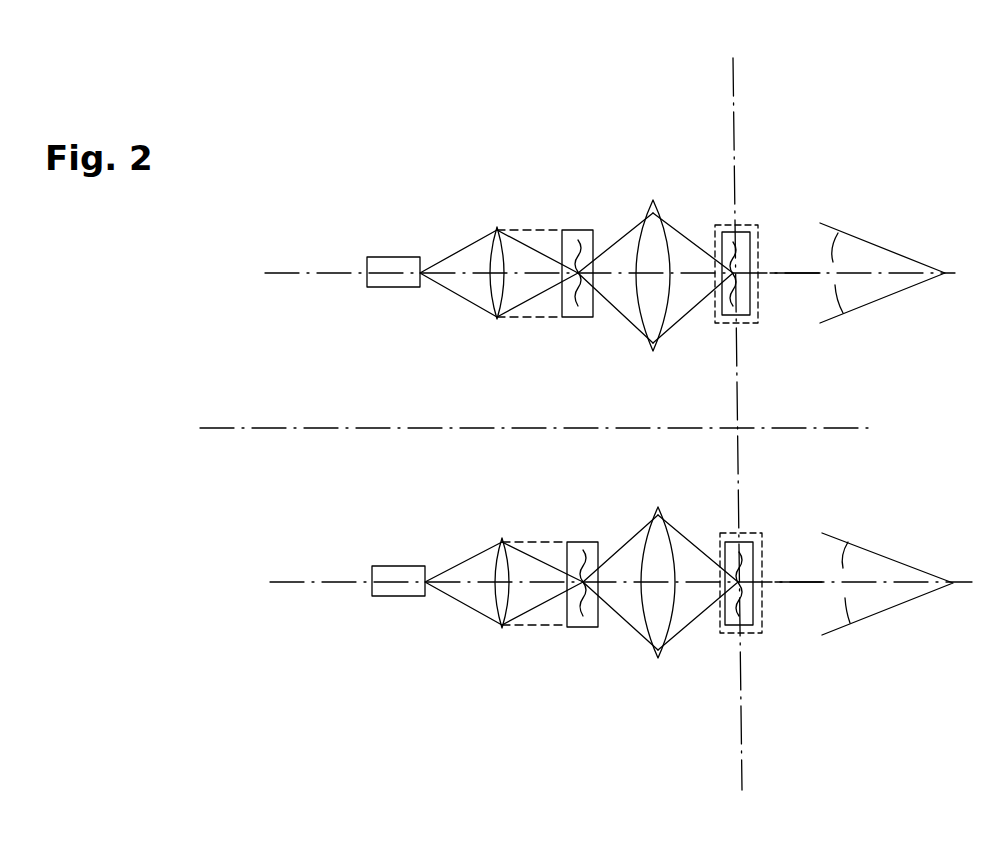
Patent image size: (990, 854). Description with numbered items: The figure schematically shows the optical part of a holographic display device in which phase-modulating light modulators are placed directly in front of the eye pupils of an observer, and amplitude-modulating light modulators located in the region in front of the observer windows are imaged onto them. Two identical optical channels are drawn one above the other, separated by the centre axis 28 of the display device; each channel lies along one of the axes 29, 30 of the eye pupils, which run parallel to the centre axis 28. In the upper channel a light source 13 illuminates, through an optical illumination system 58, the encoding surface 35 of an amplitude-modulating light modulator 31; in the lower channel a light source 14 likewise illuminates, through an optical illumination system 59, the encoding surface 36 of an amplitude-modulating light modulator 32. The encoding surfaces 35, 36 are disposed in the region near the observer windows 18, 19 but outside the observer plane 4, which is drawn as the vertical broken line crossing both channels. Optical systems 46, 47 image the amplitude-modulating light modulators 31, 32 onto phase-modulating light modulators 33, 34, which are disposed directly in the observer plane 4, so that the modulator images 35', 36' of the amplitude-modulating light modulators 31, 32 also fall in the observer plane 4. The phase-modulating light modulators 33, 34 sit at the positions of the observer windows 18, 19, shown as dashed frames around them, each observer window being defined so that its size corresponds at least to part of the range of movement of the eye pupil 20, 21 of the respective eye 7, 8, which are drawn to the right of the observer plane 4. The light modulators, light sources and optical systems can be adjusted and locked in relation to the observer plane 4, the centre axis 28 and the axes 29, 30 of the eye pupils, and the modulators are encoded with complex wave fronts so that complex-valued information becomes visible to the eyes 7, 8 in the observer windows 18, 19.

The observer plane 4 is at (735, 88).
The eye 7 is at (877, 243).
The eye 8 is at (905, 558).
The light source 13 is at (384, 258).
The light source 14 is at (391, 598).
The observer window 18 is at (758, 324).
The observer window 19 is at (762, 534).
The eye pupil 20 is at (830, 270).
The eye pupil 21 is at (840, 575).
The centre axis 28 is at (318, 430).
The axis of eye pupil 29 is at (290, 272).
The axis of eye pupil 30 is at (292, 584).
The amplitude-modulating light modulator 31 is at (578, 229).
The amplitude-modulating light modulator 32 is at (583, 541).
The phase-modulating light modulator 33 is at (722, 228).
The phase-modulating light modulator 34 is at (728, 630).
The encoding surface 35 is at (558, 306).
The encoding surface 36 is at (572, 625).
The modulator image 35' is at (774, 234).
The modulator image 36' is at (774, 628).
The optical system 46 is at (652, 200).
The optical system 47 is at (660, 657).
The optical illumination system 58 is at (497, 226).
The optical illumination system 59 is at (501, 628).